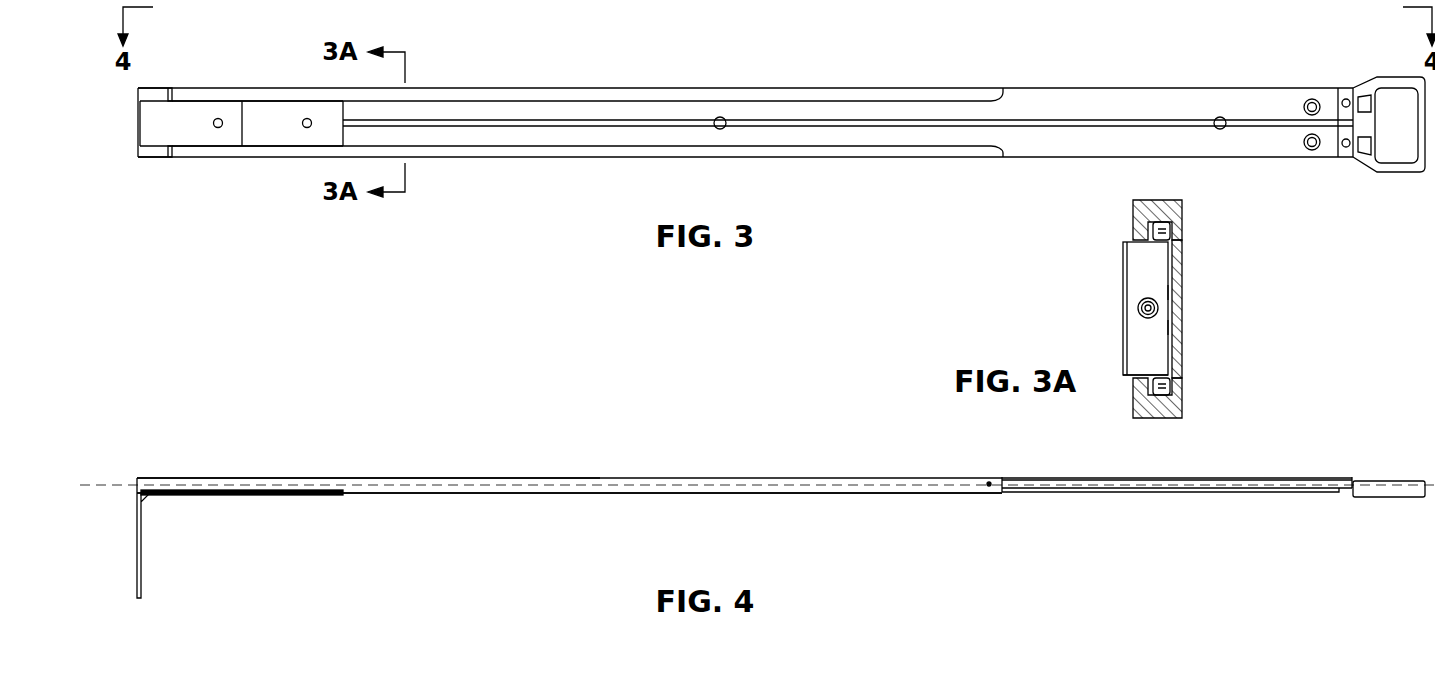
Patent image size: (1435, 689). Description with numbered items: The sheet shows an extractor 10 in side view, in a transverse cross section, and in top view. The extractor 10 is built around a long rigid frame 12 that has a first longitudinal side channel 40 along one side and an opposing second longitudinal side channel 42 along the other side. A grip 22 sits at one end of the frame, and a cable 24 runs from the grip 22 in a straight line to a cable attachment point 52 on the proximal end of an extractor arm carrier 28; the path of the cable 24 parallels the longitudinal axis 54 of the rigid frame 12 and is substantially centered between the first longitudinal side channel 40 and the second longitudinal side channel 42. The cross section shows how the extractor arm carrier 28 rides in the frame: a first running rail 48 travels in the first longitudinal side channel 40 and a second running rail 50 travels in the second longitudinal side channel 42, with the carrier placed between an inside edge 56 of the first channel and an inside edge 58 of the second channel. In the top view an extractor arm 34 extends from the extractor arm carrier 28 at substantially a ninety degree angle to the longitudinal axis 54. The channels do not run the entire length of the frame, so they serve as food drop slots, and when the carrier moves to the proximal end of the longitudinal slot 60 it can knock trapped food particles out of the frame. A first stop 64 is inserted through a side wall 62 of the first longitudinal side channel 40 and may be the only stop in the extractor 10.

In FIG. 4, the extractor 10 is at (393, 558).
In FIG. 4, the rigid frame 12 is at (384, 452).
In FIG. 3, the grip 22 is at (1403, 163).
In FIG. 3, the cable 24 is at (1052, 120).
In FIG. 3A, the extractor arm carrier 28 is at (1150, 352).
In FIG. 4, the extractor arm carrier 28 is at (207, 497).
In FIG. 4, the extractor arm 34 is at (143, 572).
In FIG. 3, the first longitudinal side channel 40 is at (652, 95).
In FIG. 3A, the first longitudinal side channel 40 is at (1140, 210).
In FIG. 4, the first longitudinal side channel 40 is at (525, 476).
In FIG. 3, the second longitudinal side channel 42 is at (795, 147).
In FIG. 3A, the second longitudinal side channel 42 is at (1175, 416).
In FIG. 3A, the first running rail 48 is at (1165, 237).
In FIG. 3A, the second running rail 50 is at (1162, 390).
In FIG. 3, the cable attachment point 52 is at (350, 126).
In FIG. 3A, the cable attachment point 52 is at (1152, 308).
In FIG. 4, the longitudinal axis 54 is at (113, 483).
In FIG. 3A, the inside edge of the first longitudinal side channel 56 is at (1123, 266).
In FIG. 3A, the inside edge of the second longitudinal side channel 58 is at (1140, 376).
In FIG. 3, the longitudinal slot 60 is at (497, 132).
In FIG. 4, the side wall 62 is at (905, 490).
In FIG. 4, the first stop 64 is at (989, 485).